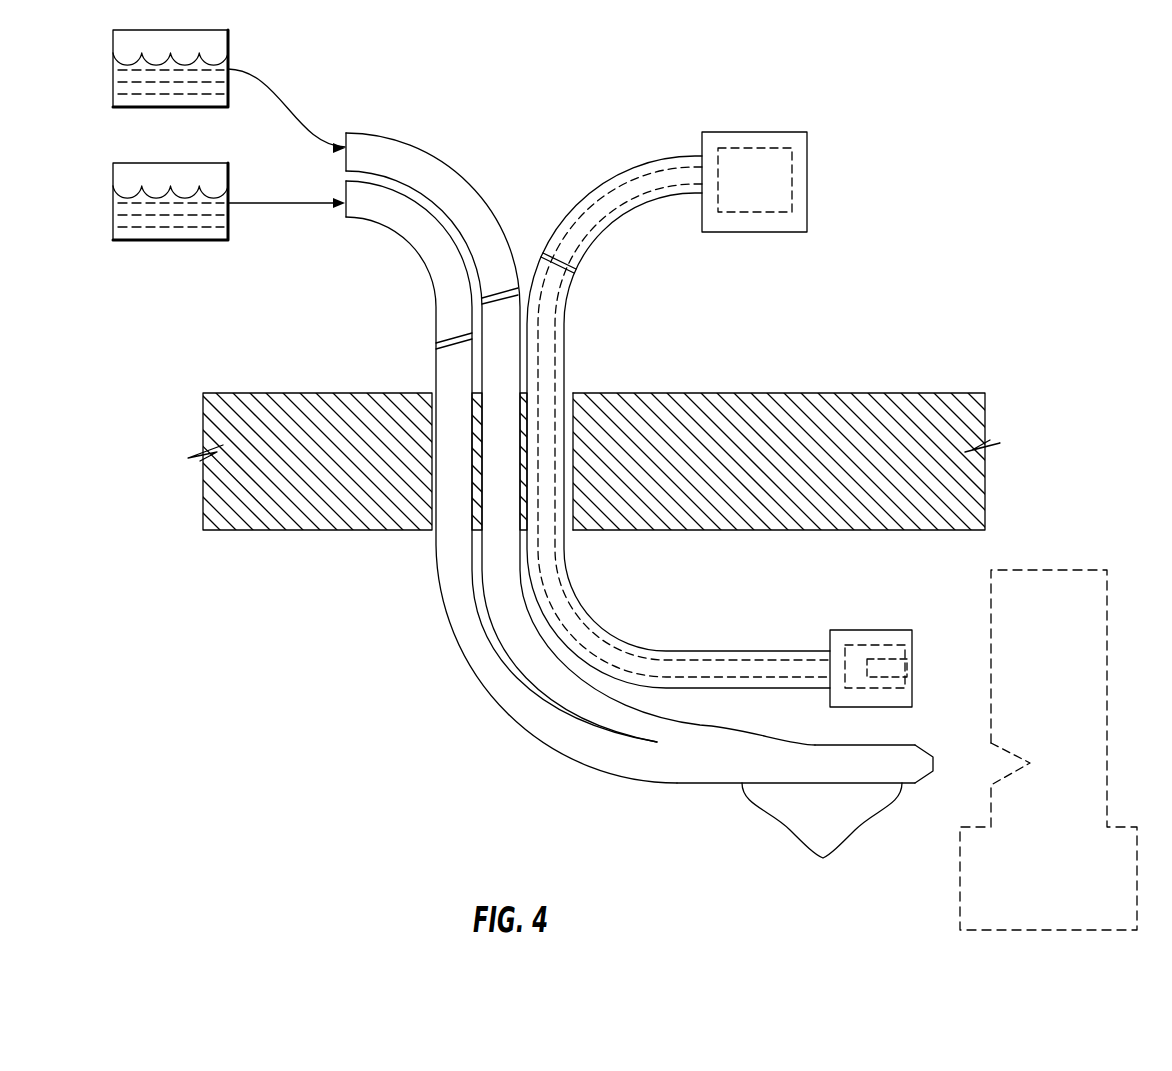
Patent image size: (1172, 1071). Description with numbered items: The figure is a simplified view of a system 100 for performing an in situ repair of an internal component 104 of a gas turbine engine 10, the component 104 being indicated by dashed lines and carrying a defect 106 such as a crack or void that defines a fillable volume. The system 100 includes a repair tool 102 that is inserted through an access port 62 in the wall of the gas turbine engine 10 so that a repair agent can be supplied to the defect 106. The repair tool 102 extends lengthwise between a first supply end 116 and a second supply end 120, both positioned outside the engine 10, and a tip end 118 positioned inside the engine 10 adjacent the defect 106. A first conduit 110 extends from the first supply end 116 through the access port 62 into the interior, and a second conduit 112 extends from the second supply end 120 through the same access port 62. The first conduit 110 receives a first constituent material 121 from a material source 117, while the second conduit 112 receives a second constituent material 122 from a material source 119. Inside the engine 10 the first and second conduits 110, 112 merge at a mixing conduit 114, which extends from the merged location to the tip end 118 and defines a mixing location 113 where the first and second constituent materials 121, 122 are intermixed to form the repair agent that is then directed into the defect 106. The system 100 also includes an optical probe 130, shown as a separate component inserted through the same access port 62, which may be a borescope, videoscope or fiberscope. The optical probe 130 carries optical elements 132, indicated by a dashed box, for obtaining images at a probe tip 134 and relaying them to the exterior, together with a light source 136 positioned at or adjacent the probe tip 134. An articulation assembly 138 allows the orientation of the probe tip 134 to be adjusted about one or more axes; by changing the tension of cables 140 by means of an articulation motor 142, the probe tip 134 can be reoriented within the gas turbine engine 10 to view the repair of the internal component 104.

The gas turbine engine 10 is at (913, 392).
The access port 62 is at (567, 395).
The system 100 is at (1045, 166).
The repair tool 102 is at (405, 612).
The internal component 104 is at (1108, 677).
The defect 106 is at (1001, 748).
The first conduit 110 is at (473, 178).
The second conduit 112 is at (404, 240).
The mixing location 113 is at (822, 839).
The mixing conduit 114 is at (808, 758).
The first supply end 116 is at (347, 134).
The material source 117 is at (137, 107).
The tip end 118 is at (933, 765).
The material source 119 is at (137, 240).
The second supply end 120 is at (348, 218).
The first constituent material 121 is at (242, 68).
The second constituent material 122 is at (273, 207).
The optical probe 130 is at (678, 394).
The optical elements 132 is at (855, 645).
The probe tip 134 is at (883, 630).
The light source 136 is at (903, 670).
The articulation assembly 138 is at (747, 147).
The cables 140 is at (655, 166).
The articulation motor 142 is at (789, 147).